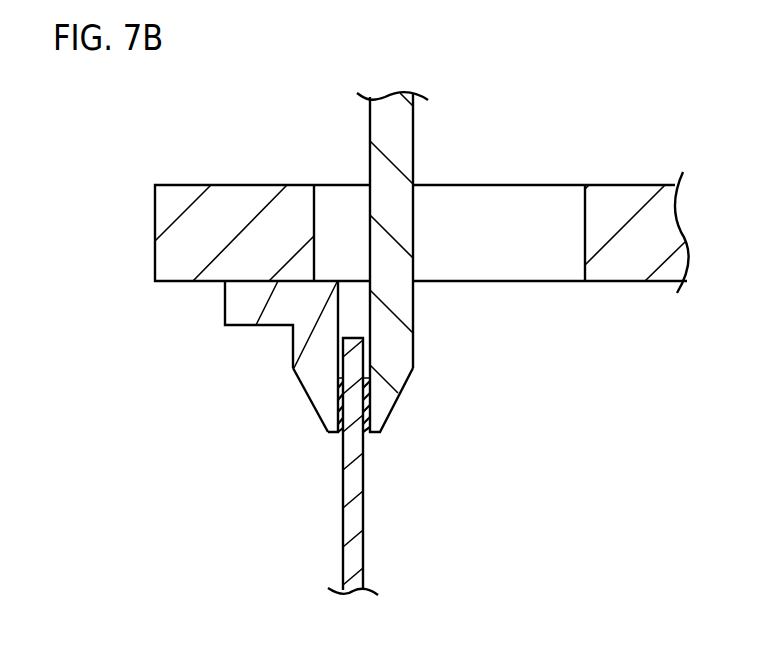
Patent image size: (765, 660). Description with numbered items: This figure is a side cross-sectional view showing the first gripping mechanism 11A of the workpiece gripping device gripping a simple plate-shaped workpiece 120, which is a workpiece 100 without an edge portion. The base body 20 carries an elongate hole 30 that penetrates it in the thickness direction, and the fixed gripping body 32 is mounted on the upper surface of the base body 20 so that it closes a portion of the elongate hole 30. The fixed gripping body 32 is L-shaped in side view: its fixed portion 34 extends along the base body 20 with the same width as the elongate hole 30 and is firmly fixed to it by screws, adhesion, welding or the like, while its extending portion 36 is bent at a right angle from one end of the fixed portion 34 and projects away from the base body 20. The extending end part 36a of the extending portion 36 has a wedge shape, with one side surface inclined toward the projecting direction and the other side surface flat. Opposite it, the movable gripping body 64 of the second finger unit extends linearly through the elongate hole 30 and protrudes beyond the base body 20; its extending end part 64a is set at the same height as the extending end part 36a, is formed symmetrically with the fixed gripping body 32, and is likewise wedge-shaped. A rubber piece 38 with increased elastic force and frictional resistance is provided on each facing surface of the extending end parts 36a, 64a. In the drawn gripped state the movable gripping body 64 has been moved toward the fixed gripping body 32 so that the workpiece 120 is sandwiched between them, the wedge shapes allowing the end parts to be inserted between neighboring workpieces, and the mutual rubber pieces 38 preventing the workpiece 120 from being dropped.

The base body 20 is at (225, 169).
The elongate hole 30 is at (527, 198).
The fixed gripping body 32 is at (266, 371).
The fixed portion 34 is at (233, 303).
The extending portion 36 is at (291, 371).
The extending end part 36a is at (308, 380).
The rubber piece 38 is at (338, 414).
The movable gripping body 64 is at (403, 127).
The extending end part 64a is at (402, 345).
The plate-shaped workpiece 120 is at (406, 466).
The workpiece 100 is at (363, 535).
The first gripping mechanism 11A is at (367, 438).